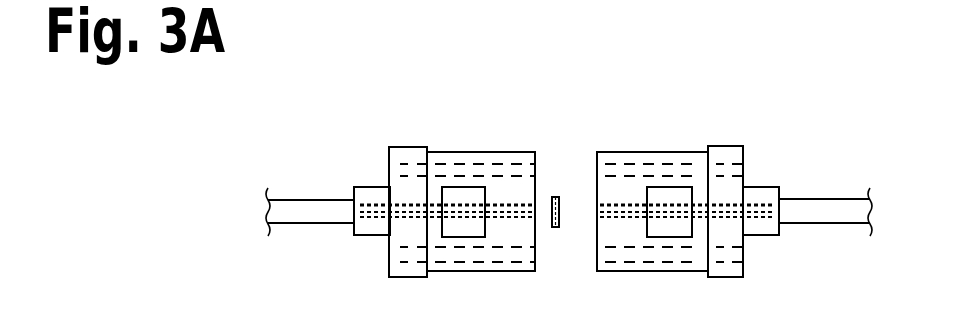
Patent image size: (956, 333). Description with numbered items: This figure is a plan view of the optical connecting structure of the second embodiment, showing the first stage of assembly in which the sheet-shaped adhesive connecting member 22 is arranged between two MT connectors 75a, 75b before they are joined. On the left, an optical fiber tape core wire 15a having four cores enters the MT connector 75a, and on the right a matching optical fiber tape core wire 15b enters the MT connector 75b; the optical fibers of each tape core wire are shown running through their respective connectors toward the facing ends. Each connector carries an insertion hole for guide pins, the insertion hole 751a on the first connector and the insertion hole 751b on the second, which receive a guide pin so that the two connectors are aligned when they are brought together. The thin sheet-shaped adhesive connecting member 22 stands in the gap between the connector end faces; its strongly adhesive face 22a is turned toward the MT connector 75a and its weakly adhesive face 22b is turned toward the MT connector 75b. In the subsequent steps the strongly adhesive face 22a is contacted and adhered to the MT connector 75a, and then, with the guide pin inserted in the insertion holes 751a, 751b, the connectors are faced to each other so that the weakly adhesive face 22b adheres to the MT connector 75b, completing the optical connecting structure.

The optical fiber tape core wire 15a is at (306, 203).
The insertion hole for guide pin 751a is at (444, 168).
The MT connector 75a is at (474, 152).
The sheet-shaped adhesive connecting member 22 is at (556, 196).
The strongly adhesive face 22a is at (552, 228).
The weakly adhesive face 22b is at (559, 228).
The MT connector 75b is at (614, 152).
The insertion hole for guide pin 751b is at (670, 168).
The optical fiber tape core wire 15b is at (812, 205).